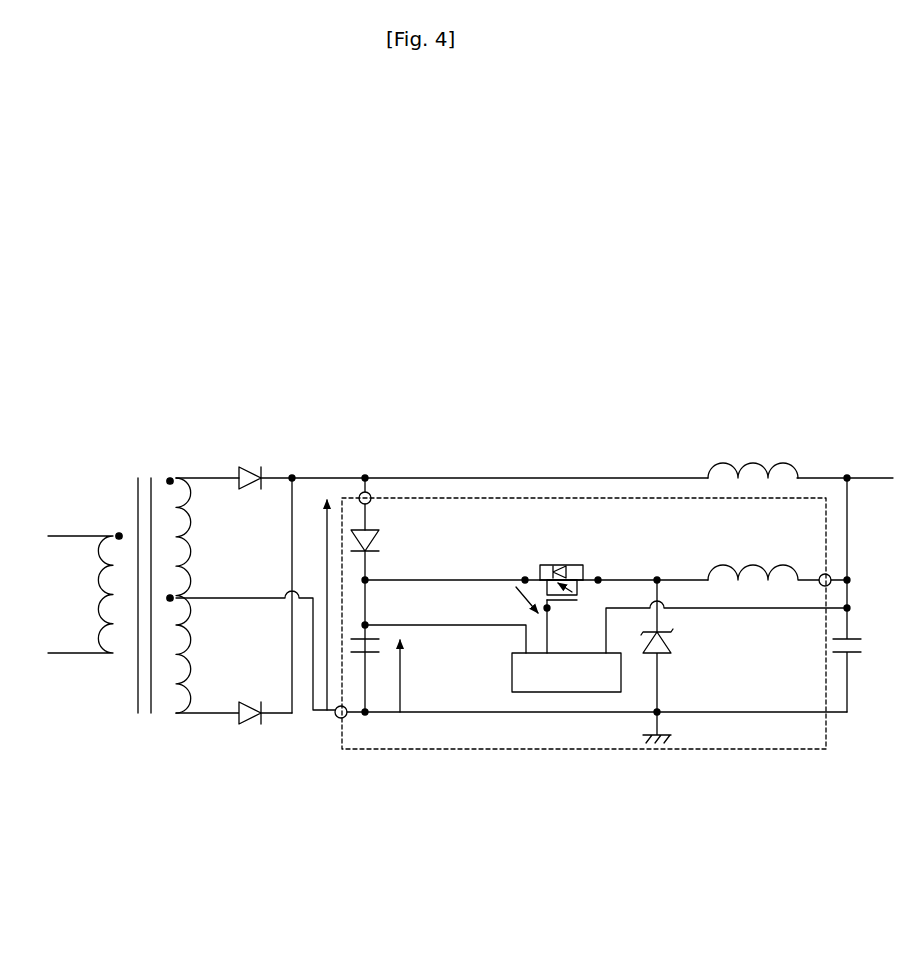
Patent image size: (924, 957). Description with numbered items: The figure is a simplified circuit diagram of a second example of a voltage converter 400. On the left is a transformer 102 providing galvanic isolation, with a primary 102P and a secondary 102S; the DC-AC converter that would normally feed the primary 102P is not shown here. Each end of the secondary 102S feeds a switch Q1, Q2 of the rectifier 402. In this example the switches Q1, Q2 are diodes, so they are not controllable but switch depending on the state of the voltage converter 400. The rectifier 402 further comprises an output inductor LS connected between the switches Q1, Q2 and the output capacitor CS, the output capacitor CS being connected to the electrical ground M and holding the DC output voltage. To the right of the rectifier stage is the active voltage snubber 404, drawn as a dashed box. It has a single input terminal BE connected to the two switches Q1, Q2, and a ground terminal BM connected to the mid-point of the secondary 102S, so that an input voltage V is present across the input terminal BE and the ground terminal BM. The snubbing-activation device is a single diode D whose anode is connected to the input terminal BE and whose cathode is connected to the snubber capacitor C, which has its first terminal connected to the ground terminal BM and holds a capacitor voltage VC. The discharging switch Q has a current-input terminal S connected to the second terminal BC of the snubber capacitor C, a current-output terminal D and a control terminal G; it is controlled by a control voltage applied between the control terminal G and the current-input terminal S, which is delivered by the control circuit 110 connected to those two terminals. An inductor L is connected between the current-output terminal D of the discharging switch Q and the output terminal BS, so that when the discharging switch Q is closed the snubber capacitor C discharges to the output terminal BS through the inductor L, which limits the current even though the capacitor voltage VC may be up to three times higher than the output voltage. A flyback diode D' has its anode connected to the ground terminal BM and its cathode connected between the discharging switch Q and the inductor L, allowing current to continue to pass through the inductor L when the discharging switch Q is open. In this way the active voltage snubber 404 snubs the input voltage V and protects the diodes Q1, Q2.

The voltage converter 400 is at (688, 262).
The transformer 102 is at (138, 752).
The primary 102P is at (121, 663).
The secondary 102S is at (178, 716).
The rectifier 402 is at (263, 560).
The switch Q1 is at (243, 468).
The switch Q2 is at (243, 703).
The input voltage V is at (315, 605).
The ground terminal BM is at (336, 718).
The input terminal BE is at (368, 491).
The active voltage snubber 404 is at (614, 633).
The diode D is at (372, 530).
The second terminal BC is at (368, 624).
The snubber capacitor C is at (374, 656).
The capacitor voltage VC is at (415, 676).
The current-input terminal S is at (524, 578).
The discharging switch Q is at (568, 552).
The control terminal G is at (550, 610).
The control circuit 110 is at (581, 688).
The flyback diode D' is at (668, 644).
The electrical ground M is at (675, 742).
The inductor L is at (752, 568).
The output terminal BS is at (835, 573).
The output capacitor CS is at (858, 655).
The output inductor LS is at (748, 462).